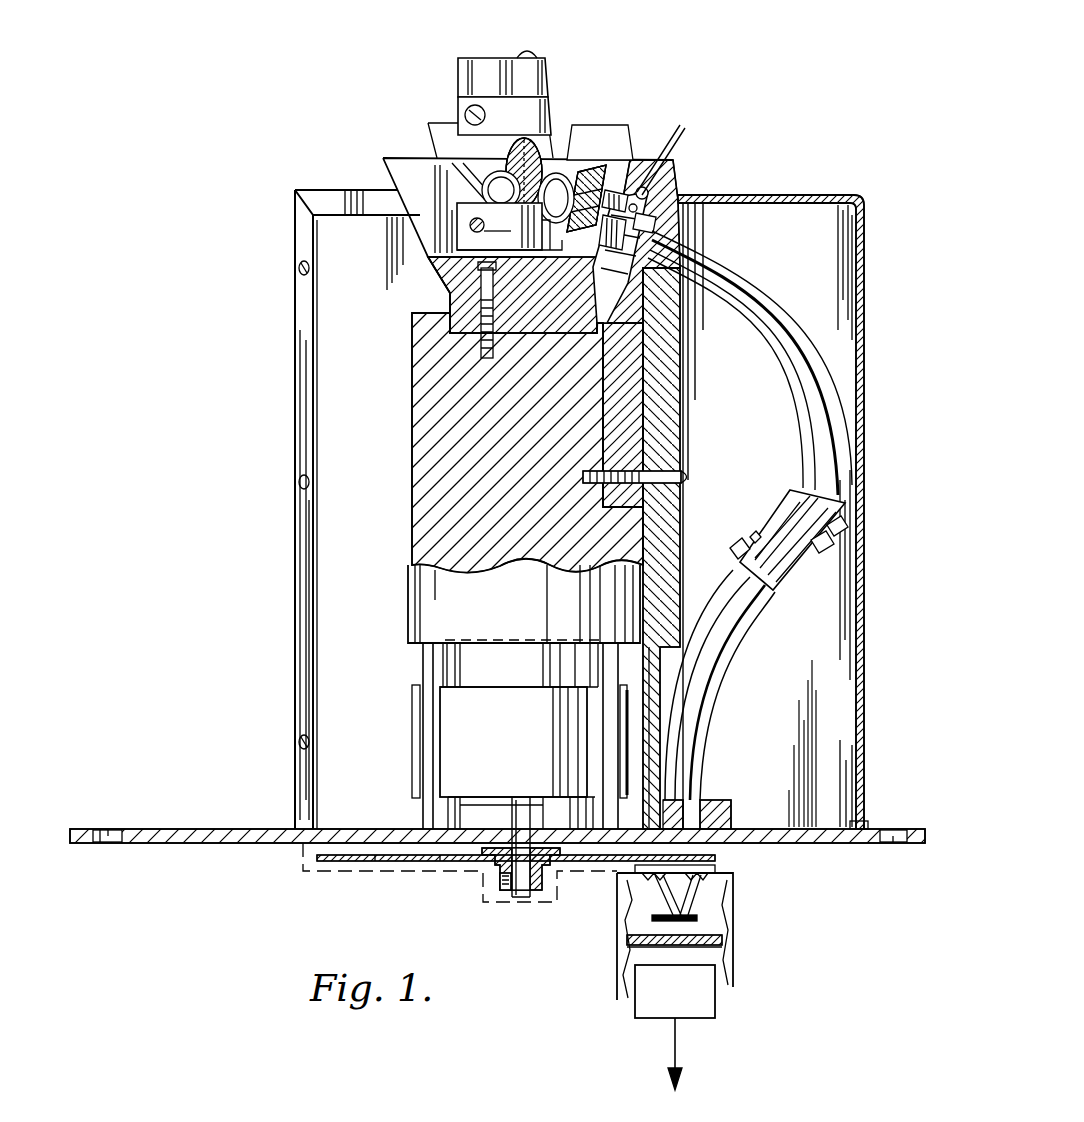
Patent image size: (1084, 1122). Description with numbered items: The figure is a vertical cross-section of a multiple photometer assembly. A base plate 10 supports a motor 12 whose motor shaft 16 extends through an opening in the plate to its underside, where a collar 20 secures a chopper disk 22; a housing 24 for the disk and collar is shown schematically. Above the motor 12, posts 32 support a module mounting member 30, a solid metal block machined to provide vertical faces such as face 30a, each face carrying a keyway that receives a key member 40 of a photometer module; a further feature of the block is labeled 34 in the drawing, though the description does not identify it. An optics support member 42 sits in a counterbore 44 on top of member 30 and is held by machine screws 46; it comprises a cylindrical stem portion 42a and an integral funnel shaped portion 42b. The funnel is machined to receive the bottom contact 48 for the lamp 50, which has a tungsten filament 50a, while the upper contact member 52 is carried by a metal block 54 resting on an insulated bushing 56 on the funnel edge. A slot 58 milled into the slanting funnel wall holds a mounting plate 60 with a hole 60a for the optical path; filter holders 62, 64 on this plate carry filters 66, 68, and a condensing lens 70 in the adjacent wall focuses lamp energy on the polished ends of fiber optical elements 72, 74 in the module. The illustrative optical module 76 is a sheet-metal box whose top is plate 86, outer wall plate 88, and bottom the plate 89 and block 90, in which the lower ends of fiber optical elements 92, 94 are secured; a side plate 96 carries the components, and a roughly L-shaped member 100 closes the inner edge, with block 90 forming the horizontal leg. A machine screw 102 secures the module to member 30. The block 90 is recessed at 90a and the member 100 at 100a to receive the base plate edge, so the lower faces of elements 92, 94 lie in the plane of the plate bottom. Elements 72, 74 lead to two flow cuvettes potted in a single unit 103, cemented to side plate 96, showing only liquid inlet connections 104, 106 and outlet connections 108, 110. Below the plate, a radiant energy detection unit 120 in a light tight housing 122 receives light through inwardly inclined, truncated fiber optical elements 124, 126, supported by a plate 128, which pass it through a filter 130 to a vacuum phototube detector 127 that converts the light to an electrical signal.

The base plate 10 is at (873, 832).
The motor 12 is at (510, 737).
The motor shaft 16 is at (513, 897).
The collar 20 is at (537, 893).
The chopper disk 22 is at (388, 862).
The housing 24 is at (303, 872).
The module mounting member 30 is at (480, 614).
The vertical face 30a is at (560, 562).
The posts 32 is at (423, 665).
The bore 34 is at (603, 412).
The key member 40 is at (628, 355).
The optics support member 42 is at (416, 229).
The stem portion 42a is at (633, 320).
The funnel shaped portion 42b is at (470, 190).
The counterbore 44 is at (450, 342).
The machine screws 46 is at (485, 280).
The bottom contact 48 is at (495, 230).
The lamp 50 is at (548, 135).
The tungsten filament 50a is at (505, 178).
The upper contact member 52 is at (516, 130).
The metal block 54 is at (540, 88).
The insulated bushing 56 is at (522, 52).
The slot 58 is at (662, 162).
The mounting plate 60 is at (685, 125).
The hole 60a is at (648, 195).
The filter holder 62 is at (617, 163).
The filter holder 64 is at (682, 210).
The filter 66 is at (655, 215).
The filter 68 is at (680, 235).
The condensing lens 70 is at (582, 180).
The fiber optical element 72 is at (730, 287).
The fiber optical element 74 is at (708, 282).
The optical module 76 is at (850, 152).
The top plate 86 is at (803, 196).
The outer wall plate 88 is at (858, 628).
The bottom plate 89 is at (803, 815).
The block 90 is at (715, 800).
The recess 90a is at (728, 801).
The fiber optical element 92 is at (708, 610).
The fiber optical element 94 is at (713, 677).
The side plate 96 is at (771, 444).
The L-shaped member 100 is at (667, 388).
The recess 100a is at (640, 830).
The machine screw 102 is at (692, 478).
The cuvette unit 103 is at (788, 572).
The liquid inlet connection 104 is at (737, 542).
The liquid inlet connection 106 is at (752, 532).
The outlet connection 108 is at (822, 553).
The outlet connection 110 is at (846, 532).
The radiant energy detection unit 120 is at (770, 888).
The light tight housing 122 is at (622, 883).
The fiber optical element 124 is at (658, 903).
The fiber optical element 126 is at (690, 897).
The vacuum phototube detector 127 is at (703, 1002).
The plate 128 is at (722, 938).
The filter 130 is at (712, 950).